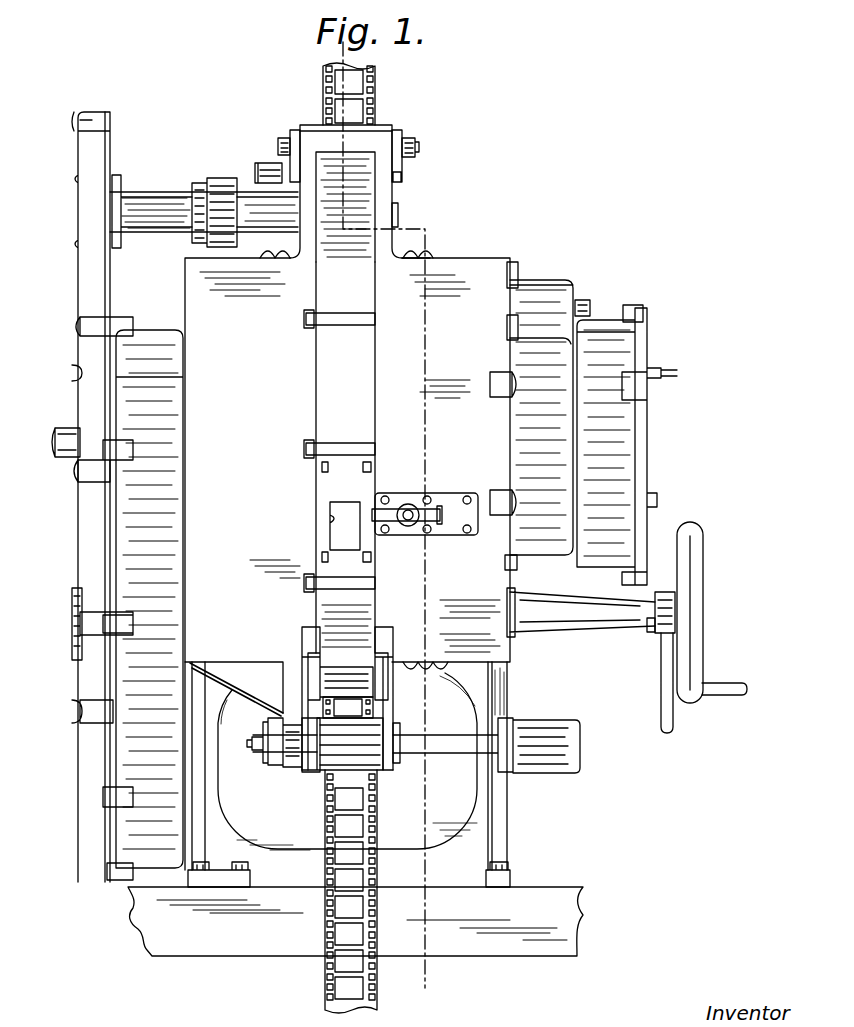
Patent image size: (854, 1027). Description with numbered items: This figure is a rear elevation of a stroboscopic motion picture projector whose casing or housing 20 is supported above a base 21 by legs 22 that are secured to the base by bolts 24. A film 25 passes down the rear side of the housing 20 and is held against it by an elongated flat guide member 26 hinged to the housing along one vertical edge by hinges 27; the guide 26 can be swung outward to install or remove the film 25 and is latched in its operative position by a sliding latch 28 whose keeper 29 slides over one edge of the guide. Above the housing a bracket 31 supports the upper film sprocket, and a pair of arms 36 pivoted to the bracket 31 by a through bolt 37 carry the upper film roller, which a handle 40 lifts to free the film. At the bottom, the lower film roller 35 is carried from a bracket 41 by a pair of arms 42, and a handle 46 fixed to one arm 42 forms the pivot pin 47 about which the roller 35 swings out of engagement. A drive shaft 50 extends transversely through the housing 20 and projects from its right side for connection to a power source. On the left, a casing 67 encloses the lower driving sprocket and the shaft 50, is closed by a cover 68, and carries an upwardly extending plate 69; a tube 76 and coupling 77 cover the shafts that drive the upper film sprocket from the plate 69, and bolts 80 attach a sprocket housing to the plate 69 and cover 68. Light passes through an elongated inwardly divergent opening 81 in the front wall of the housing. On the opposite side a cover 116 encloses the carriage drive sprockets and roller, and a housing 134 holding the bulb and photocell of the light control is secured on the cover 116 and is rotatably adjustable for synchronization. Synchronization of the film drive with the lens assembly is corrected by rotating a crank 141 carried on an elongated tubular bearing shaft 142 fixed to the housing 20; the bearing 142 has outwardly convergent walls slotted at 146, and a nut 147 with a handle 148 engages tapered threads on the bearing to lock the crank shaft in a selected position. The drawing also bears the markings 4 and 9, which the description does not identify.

The section line 4- 4 is at (348, 53).
The reel support 9 is at (86, 526).
The casing or housing 20 is at (484, 260).
The base 21 is at (585, 905).
The legs 22 is at (500, 831).
The bolts 24 is at (507, 869).
The film 25 is at (375, 86).
The elongated flat guide member 26 is at (377, 365).
The hinges 27 is at (305, 320).
The sliding latch 28 is at (441, 496).
The keeper 29 is at (398, 522).
The bracket 31 is at (385, 195).
The lower film roller 35 is at (362, 689).
The arms 36 is at (289, 131).
The through bolt 37 is at (417, 148).
The handle 40 is at (262, 168).
The bracket 41 is at (291, 688).
The arms 42 is at (386, 688).
The handle 46 is at (582, 753).
The pivot pin 47 is at (254, 750).
The drive shaft 50 is at (66, 428).
The casing 67 is at (165, 727).
The cover 68 is at (112, 764).
The plate 69 is at (110, 272).
The tube 76 is at (170, 191).
The coupling 77 is at (215, 182).
The bolts 80 is at (79, 326).
The elongated inwardly divergent opening 81 is at (332, 526).
The cover 116 is at (560, 284).
The housing 134 is at (605, 321).
The crank 141 is at (695, 560).
The elongated tubular bearing shaft 142 is at (580, 630).
The slots 146 is at (652, 634).
The nut 147 is at (673, 606).
The handle 148 is at (673, 732).